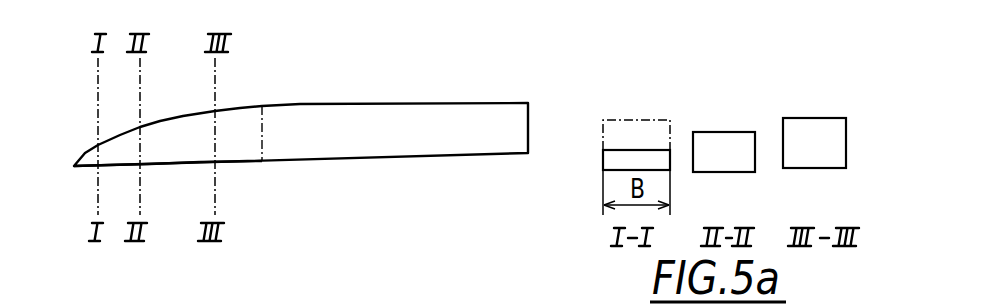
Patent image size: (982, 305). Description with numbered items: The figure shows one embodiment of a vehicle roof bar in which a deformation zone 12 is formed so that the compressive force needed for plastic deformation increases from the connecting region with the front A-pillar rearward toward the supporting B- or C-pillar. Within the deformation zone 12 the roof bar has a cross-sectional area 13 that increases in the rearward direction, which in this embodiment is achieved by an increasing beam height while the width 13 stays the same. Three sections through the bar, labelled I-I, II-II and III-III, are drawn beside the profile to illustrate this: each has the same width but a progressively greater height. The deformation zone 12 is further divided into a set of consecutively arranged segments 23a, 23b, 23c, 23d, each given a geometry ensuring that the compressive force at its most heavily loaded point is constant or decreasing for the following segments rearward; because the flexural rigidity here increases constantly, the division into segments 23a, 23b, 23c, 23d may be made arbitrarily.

The deformation zone 12 is at (178, 126).
The cross-sectional area 13 is at (635, 160).
The segment 23a is at (90, 160).
The segment 23b is at (122, 152).
The segment 23c is at (177, 152).
The segment 23d is at (240, 152).